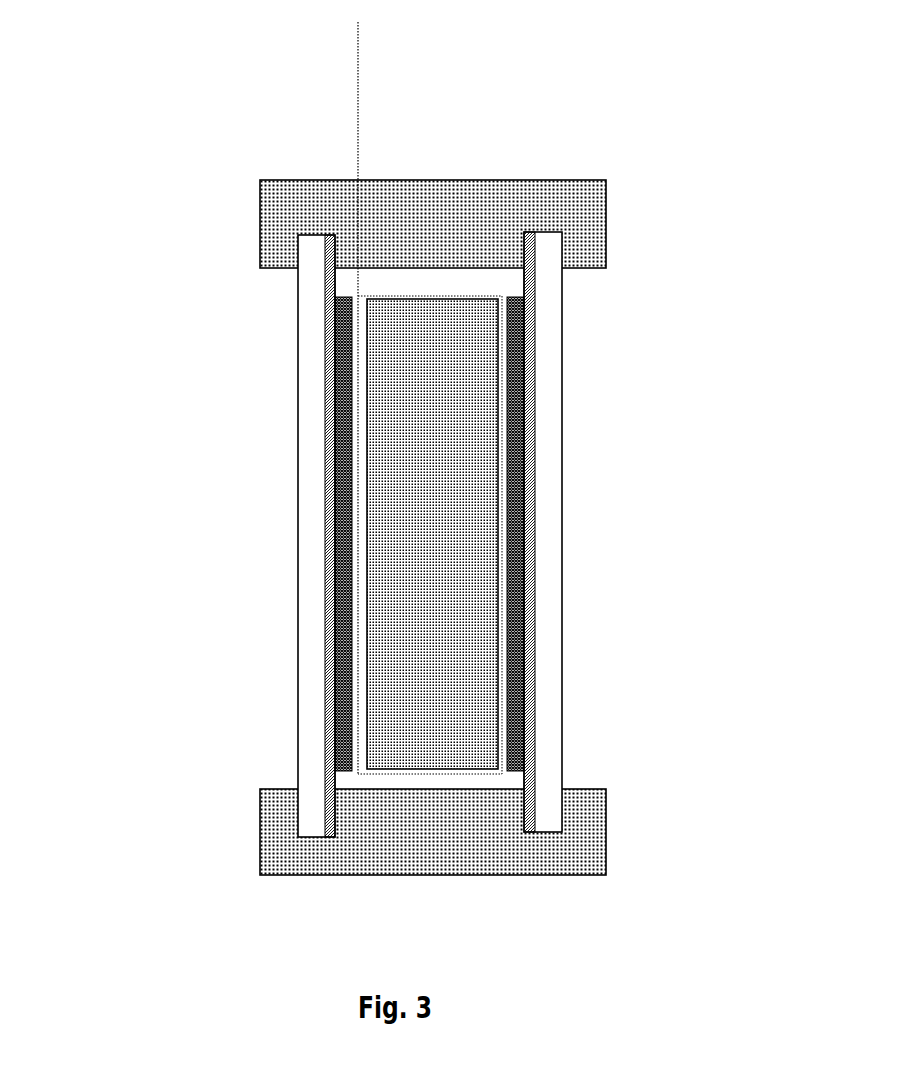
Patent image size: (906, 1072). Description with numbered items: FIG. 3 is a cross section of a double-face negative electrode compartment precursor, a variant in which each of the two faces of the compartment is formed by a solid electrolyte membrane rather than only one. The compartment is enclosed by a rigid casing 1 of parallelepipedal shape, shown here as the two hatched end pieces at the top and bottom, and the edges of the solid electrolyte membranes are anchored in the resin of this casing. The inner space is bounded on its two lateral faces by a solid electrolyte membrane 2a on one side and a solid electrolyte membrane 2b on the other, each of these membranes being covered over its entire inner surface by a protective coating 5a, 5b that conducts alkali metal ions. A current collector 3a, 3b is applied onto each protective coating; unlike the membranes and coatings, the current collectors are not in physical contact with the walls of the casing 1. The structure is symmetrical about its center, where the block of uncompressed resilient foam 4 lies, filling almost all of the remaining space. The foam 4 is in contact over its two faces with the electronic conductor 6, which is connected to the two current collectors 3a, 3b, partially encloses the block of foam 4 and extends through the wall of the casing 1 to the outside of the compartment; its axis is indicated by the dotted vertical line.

The casing 1 is at (545, 189).
The solid electrolyte membrane 2a is at (562, 331).
The solid electrolyte membrane 2b is at (293, 387).
The current collector 3a is at (520, 517).
The current collector 3b is at (343, 488).
The resilient foam 4 is at (408, 318).
The protective coating 5a is at (535, 432).
The protective coating 5b is at (338, 632).
The electronic conductor 6 is at (362, 73).